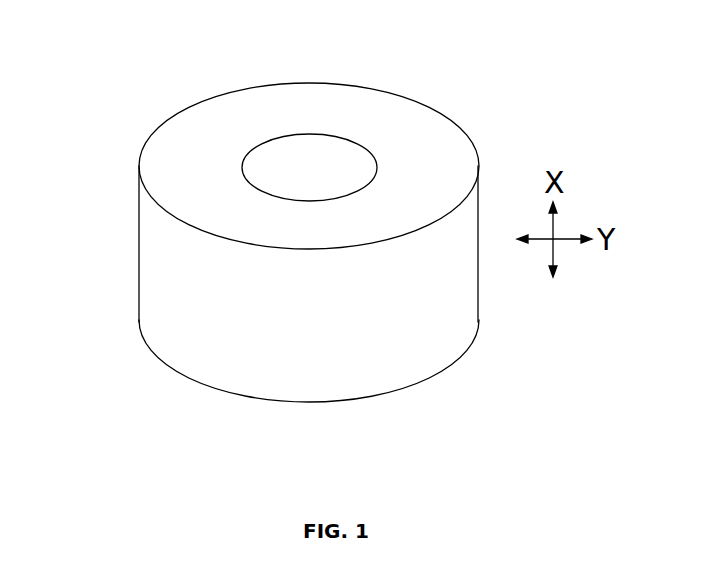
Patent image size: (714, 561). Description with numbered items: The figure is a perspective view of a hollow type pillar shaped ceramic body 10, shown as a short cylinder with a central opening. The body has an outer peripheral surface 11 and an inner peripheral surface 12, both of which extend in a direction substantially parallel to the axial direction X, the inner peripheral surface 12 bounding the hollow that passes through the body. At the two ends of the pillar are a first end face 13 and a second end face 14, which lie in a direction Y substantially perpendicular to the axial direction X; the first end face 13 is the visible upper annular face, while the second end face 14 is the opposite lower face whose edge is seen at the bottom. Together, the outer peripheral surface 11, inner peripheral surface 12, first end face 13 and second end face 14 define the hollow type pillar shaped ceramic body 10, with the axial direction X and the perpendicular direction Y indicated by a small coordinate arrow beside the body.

The hollow type pillar shaped ceramic body 10 is at (271, 248).
The outer peripheral surface 11 is at (157, 263).
The inner peripheral surface 12 is at (328, 163).
The first end face 13 is at (250, 123).
The second end face 14 is at (397, 388).